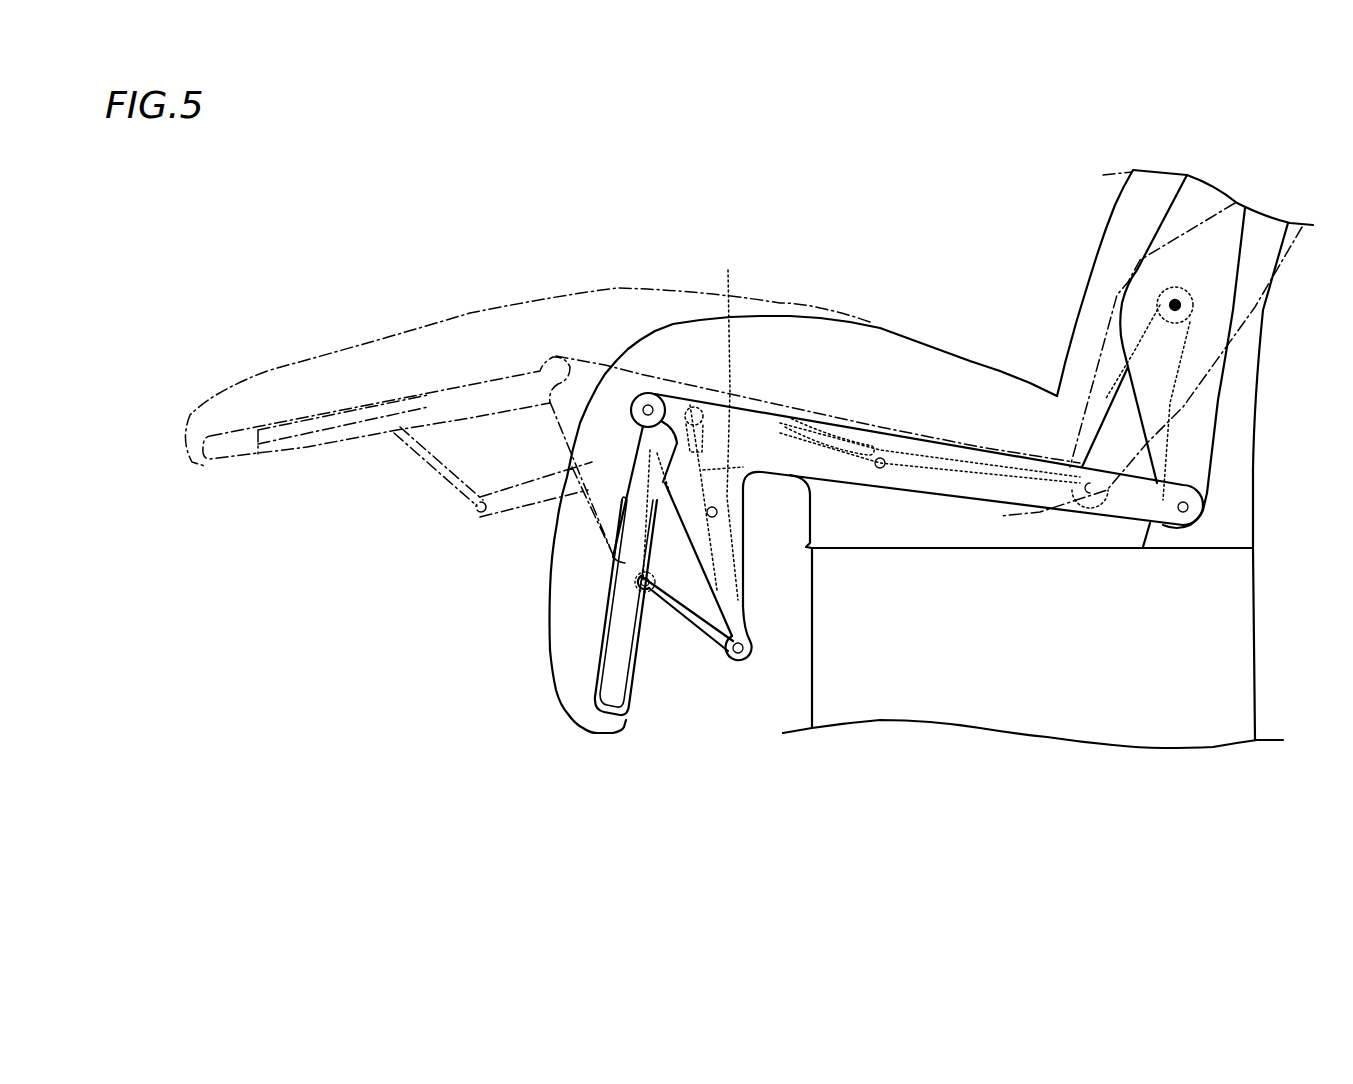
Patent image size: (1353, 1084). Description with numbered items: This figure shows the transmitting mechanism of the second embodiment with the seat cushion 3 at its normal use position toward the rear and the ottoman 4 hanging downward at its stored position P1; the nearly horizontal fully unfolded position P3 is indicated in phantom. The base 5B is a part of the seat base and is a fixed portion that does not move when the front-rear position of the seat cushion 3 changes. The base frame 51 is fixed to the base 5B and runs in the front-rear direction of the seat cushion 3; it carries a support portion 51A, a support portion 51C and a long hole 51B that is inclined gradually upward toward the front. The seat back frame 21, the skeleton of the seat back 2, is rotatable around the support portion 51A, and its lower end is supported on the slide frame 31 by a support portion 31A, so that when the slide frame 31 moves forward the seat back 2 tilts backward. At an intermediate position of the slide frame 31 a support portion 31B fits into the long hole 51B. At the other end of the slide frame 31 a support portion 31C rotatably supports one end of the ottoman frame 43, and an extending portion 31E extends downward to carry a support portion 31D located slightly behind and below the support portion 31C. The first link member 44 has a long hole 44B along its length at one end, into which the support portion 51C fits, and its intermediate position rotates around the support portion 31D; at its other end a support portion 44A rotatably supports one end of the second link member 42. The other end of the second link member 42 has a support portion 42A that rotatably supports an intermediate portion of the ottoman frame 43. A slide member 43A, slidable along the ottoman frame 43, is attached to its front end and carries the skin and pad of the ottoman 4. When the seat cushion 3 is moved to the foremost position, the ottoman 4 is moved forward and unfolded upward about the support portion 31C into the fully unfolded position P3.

The seat back 2 is at (1118, 252).
The seat back frame 21 is at (1210, 282).
The seat cushion 3 is at (900, 360).
The ottoman 4 is at (568, 645).
The base 5B is at (975, 662).
The slide frame 31 is at (978, 482).
The support portion 31A is at (1191, 507).
The support portion 31B is at (887, 460).
The support portion 31C is at (648, 392).
The support portion 31D is at (720, 512).
The extending portion 31E is at (733, 530).
The second link member 42 is at (685, 608).
The support portion 42A is at (640, 584).
The ottoman frame 43 is at (613, 667).
The slide member 43A is at (607, 566).
The first link member 44 is at (737, 631).
The support portion 44A is at (738, 660).
The long hole 44B is at (690, 405).
The base frame 51 is at (1035, 527).
The support portion 51A is at (1183, 312).
The long hole 51B is at (838, 445).
The support portion 51C is at (707, 440).
The stored position P1 is at (600, 740).
The fully unfolded position P3 is at (203, 470).